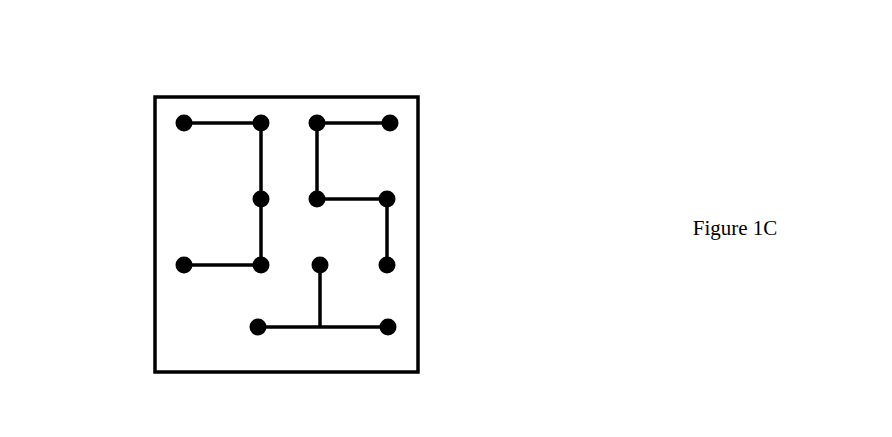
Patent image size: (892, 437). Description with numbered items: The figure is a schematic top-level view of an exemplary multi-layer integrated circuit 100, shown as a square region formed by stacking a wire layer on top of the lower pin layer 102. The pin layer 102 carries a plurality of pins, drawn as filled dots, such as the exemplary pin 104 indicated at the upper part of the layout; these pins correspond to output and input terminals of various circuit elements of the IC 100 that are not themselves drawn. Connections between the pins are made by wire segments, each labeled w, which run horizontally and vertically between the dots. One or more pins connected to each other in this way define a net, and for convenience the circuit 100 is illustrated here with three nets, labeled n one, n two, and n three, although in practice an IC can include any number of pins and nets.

The integrated circuit 100 is at (300, 190).
The pin layer 102 is at (420, 193).
The pin 104 is at (320, 118).